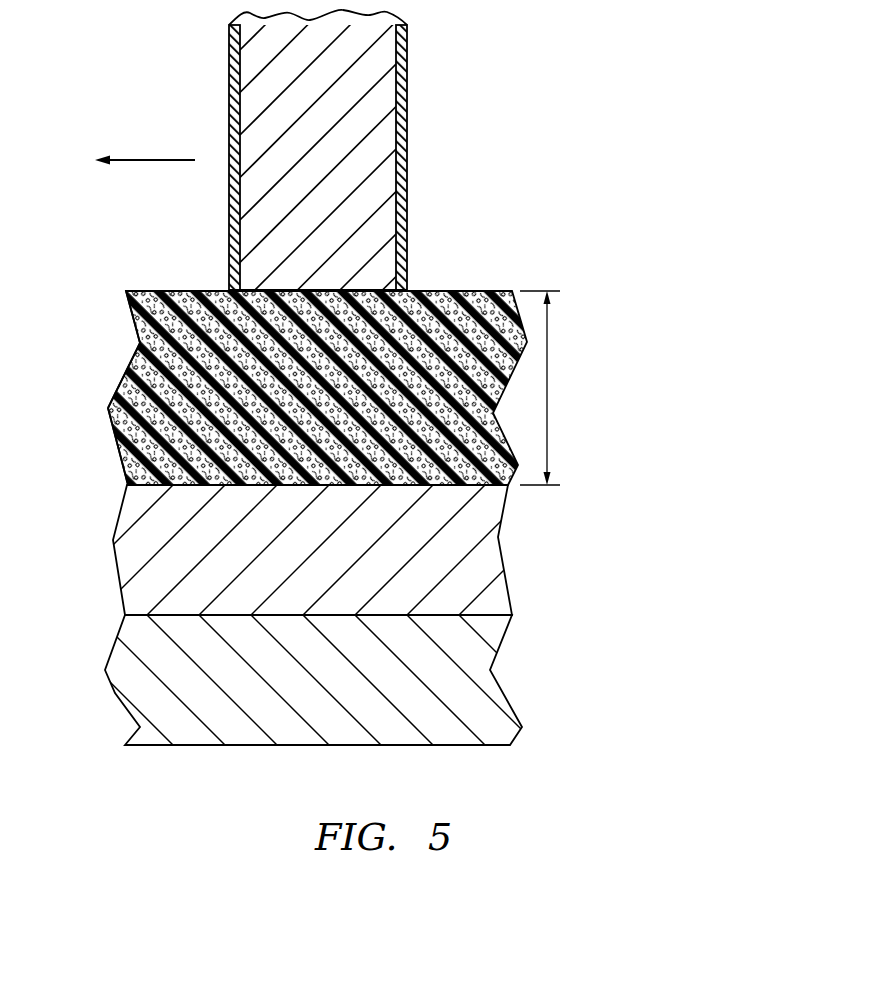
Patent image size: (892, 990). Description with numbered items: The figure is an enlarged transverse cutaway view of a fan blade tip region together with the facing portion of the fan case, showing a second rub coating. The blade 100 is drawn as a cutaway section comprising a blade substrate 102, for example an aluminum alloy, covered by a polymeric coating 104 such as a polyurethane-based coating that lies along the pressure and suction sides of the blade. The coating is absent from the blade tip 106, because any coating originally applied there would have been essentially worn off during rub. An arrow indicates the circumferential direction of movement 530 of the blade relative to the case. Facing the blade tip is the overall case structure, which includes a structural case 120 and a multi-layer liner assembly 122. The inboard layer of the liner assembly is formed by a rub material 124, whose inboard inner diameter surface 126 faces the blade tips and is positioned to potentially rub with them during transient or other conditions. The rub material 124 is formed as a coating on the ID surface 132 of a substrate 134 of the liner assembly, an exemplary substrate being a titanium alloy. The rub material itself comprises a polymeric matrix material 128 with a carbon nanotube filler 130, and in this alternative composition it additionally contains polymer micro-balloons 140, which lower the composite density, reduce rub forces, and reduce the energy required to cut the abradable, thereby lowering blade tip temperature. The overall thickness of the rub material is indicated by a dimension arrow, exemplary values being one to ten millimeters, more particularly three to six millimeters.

The direction of circumferential movement 530 is at (147, 160).
The blade 100 is at (396, 216).
The blade substrate 102 is at (385, 91).
The polymeric coating 104 is at (400, 182).
The blade tip 106 is at (417, 290).
The multi-layer liner assembly 122 is at (380, 481).
The rub material 124 is at (335, 363).
The inboard/inner diameter surface 126 is at (172, 290).
The polymeric matrix material 128 is at (122, 442).
The carbon nanotube filler 130 is at (118, 382).
The ID surface of substrate 132 is at (128, 485).
The substrate of the liner assembly 134 is at (483, 562).
The polymer micro-balloons 140 is at (135, 357).
The structural case 120 is at (320, 680).